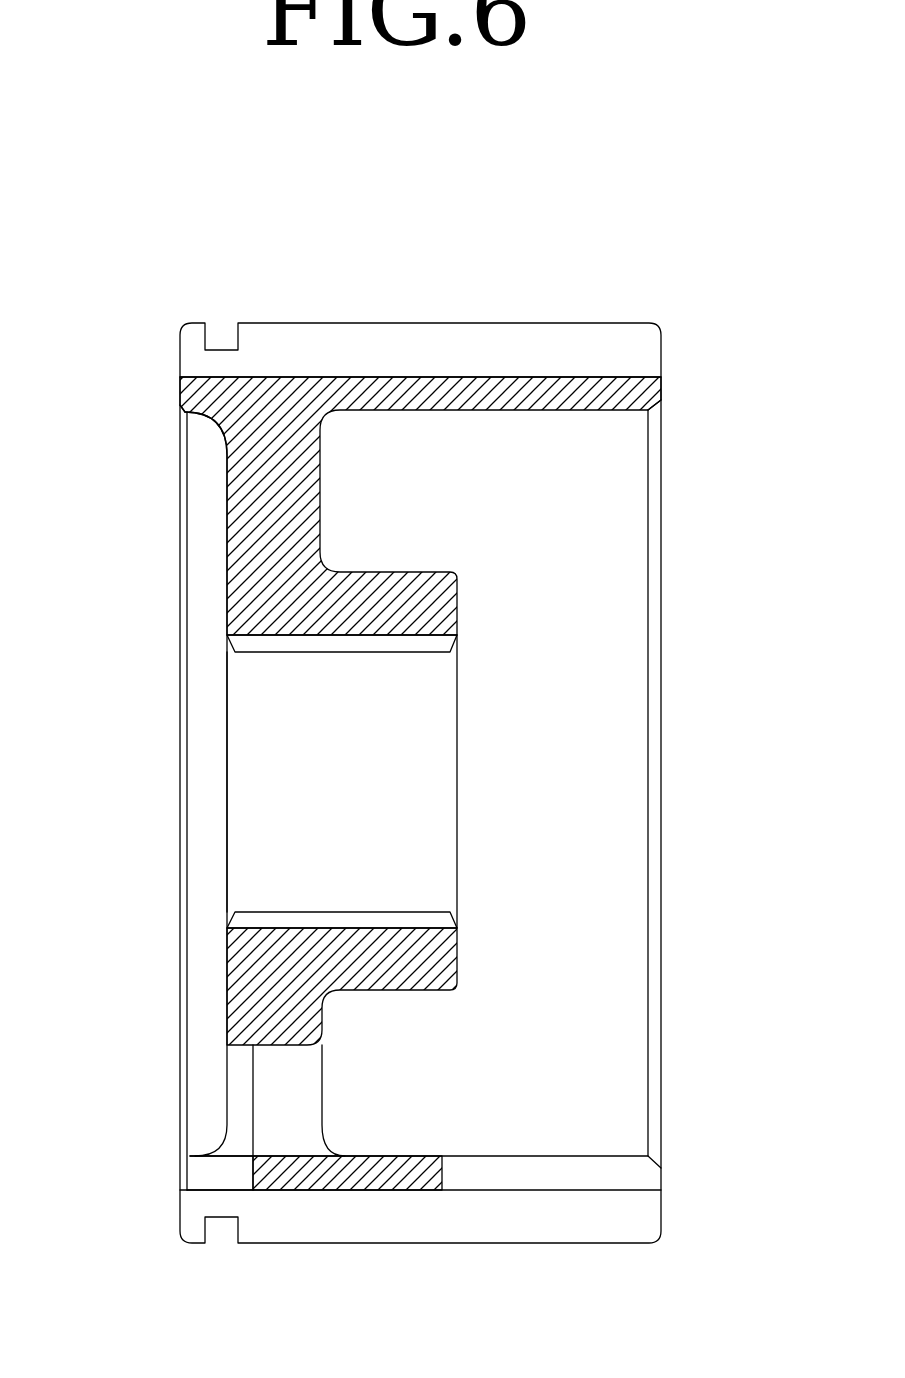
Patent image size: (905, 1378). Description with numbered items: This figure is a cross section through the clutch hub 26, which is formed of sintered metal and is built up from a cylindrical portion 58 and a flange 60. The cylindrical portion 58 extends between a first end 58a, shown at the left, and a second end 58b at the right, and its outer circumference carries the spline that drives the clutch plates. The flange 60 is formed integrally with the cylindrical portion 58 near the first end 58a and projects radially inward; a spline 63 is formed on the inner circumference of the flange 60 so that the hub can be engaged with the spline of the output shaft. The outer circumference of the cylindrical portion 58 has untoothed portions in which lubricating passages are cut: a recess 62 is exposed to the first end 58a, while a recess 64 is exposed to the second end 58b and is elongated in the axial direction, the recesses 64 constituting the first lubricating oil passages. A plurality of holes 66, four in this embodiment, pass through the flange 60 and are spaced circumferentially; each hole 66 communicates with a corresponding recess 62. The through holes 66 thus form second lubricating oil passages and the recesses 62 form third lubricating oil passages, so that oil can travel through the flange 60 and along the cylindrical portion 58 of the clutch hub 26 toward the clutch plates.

The clutch hub 26 is at (501, 320).
The cylindrical portion 58 is at (394, 377).
The first end 58a is at (180, 392).
The second end 58b is at (662, 388).
The flange 60 is at (230, 488).
The recess 62 is at (207, 1172).
The spline 63 is at (372, 640).
The recess 64 is at (560, 1172).
The hole 66 is at (300, 1078).